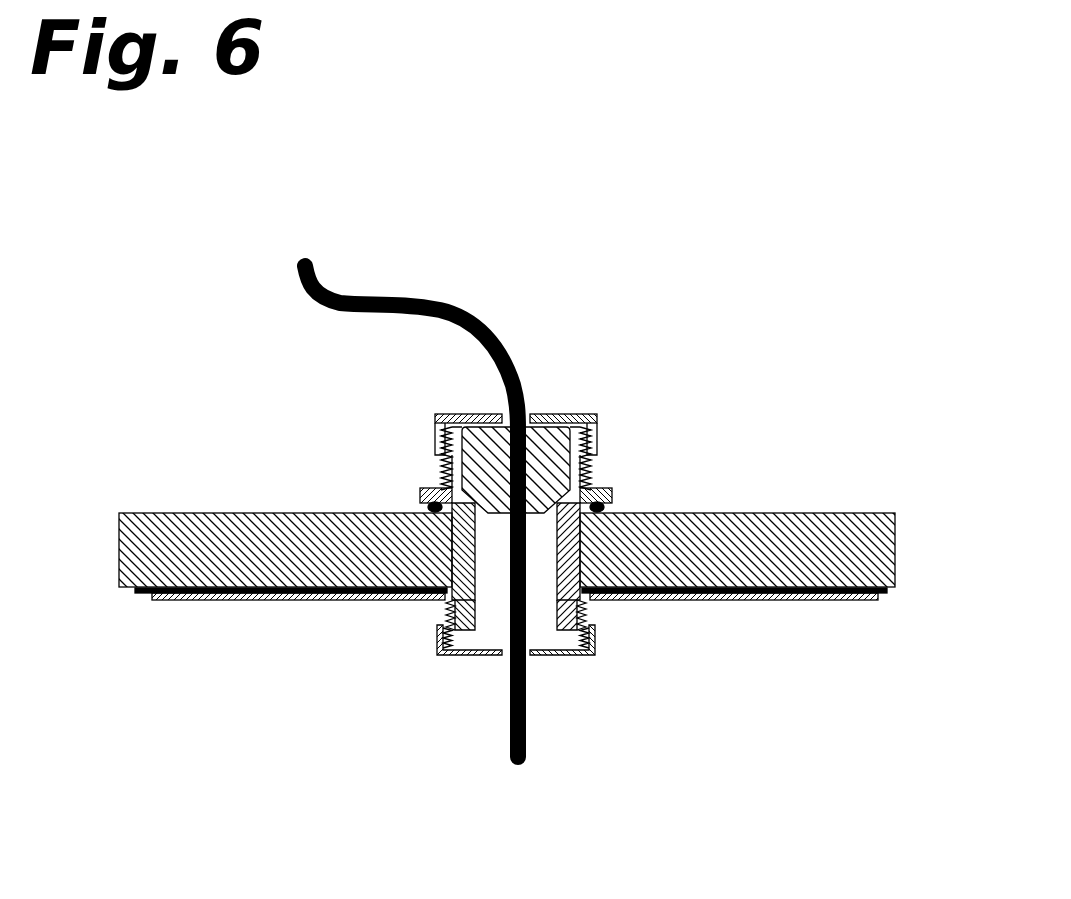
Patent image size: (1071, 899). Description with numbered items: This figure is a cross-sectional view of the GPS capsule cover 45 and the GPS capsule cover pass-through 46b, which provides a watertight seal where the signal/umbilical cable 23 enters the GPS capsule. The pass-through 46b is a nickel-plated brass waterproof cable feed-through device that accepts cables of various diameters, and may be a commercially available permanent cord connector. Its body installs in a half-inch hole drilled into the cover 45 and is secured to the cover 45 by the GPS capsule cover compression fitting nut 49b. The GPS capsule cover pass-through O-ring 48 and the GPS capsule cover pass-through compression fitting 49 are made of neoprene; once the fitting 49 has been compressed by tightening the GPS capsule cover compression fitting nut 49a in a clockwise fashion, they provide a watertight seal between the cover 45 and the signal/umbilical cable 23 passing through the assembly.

The signal/umbilical cable 23 is at (472, 320).
The GPS capsule cover 45 is at (787, 510).
The GPS capsule cover pass-through 46b is at (420, 492).
The GPS capsule cover pass-through O-ring 48 is at (425, 507).
The GPS capsule cover pass-through compression fitting 49 is at (570, 433).
The GPS capsule cover compression fitting nut 49a is at (600, 428).
The GPS capsule cover compression fitting nut 49b is at (600, 647).